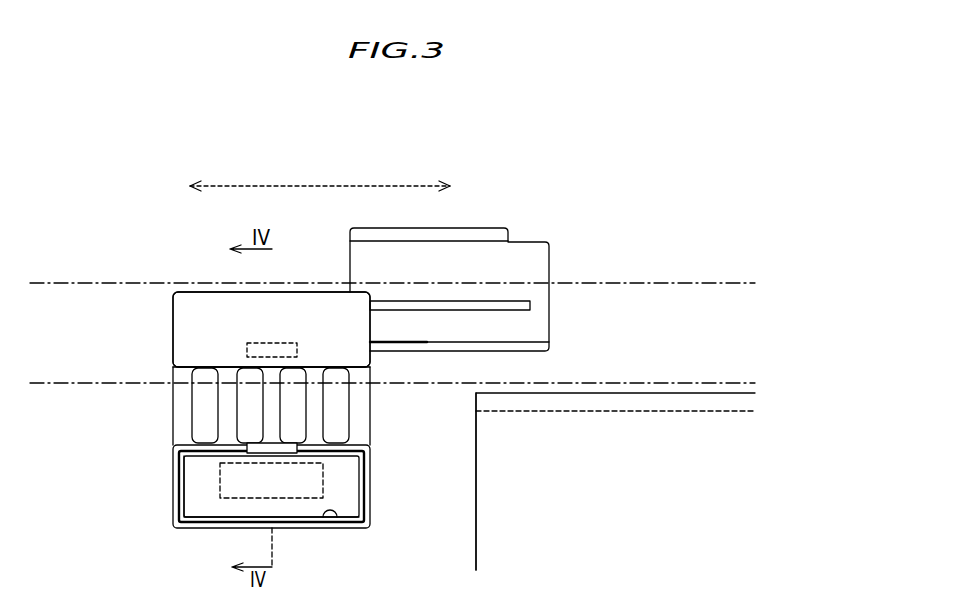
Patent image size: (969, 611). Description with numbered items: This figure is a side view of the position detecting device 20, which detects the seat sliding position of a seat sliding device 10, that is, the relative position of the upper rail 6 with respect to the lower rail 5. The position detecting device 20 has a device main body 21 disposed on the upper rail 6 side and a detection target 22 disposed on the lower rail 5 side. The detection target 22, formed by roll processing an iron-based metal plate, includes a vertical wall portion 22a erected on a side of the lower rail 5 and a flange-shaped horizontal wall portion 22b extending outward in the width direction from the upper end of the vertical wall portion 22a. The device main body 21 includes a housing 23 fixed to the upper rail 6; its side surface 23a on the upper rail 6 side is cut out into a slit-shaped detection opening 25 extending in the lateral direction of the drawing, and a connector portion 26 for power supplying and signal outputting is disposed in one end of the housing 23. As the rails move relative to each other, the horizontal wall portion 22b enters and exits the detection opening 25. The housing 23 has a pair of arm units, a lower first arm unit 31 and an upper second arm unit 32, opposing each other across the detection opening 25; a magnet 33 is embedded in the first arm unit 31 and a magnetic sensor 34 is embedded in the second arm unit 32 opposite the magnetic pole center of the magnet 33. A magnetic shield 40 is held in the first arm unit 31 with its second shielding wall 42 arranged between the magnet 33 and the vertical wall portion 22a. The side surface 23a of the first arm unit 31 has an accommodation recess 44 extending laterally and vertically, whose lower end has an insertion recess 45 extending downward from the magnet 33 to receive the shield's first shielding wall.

The position detecting device 20 is at (104, 190).
The lower rail 5 is at (55, 382).
The upper rail 6 is at (57, 282).
The seat sliding device 10 is at (391, 299).
The device main body 21 is at (174, 290).
The housing 23 is at (265, 341).
The detection target 22 is at (707, 393).
The vertical wall portion 22a is at (486, 460).
The horizontal wall portion 22b is at (620, 413).
The side surface 23a is at (202, 352).
The detection opening 25 is at (286, 418).
The connector portion 26 is at (535, 263).
The first arm unit 31 is at (175, 485).
The second arm unit 32 is at (173, 325).
The magnet 33 is at (292, 502).
The magnetic sensor 34 is at (278, 343).
The magnetic shield 40 is at (207, 505).
The second shielding wall 42 is at (232, 509).
The accommodation recess 44 is at (337, 519).
The insertion recess 45 is at (345, 551).